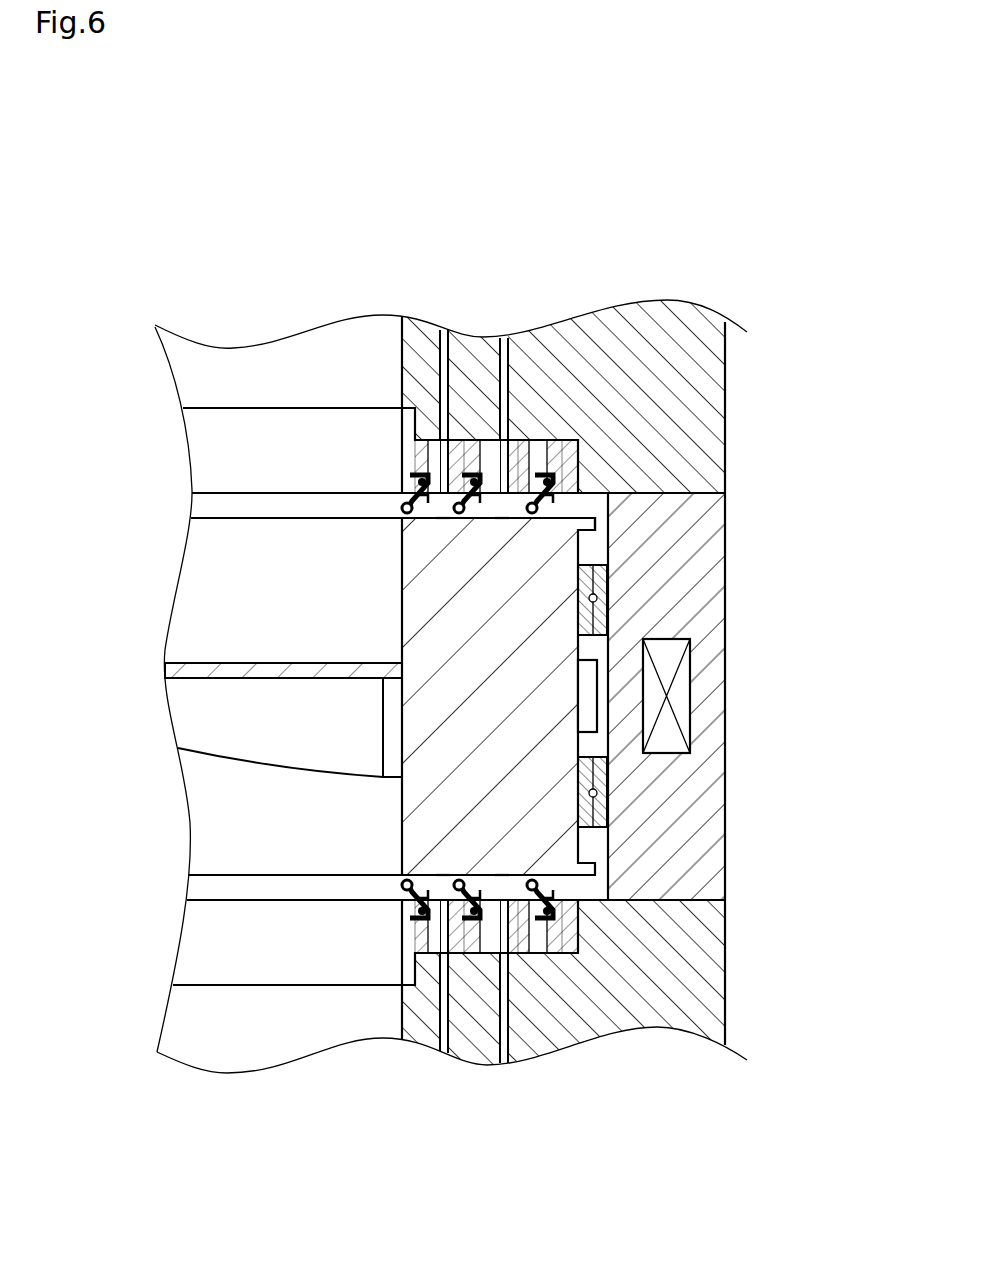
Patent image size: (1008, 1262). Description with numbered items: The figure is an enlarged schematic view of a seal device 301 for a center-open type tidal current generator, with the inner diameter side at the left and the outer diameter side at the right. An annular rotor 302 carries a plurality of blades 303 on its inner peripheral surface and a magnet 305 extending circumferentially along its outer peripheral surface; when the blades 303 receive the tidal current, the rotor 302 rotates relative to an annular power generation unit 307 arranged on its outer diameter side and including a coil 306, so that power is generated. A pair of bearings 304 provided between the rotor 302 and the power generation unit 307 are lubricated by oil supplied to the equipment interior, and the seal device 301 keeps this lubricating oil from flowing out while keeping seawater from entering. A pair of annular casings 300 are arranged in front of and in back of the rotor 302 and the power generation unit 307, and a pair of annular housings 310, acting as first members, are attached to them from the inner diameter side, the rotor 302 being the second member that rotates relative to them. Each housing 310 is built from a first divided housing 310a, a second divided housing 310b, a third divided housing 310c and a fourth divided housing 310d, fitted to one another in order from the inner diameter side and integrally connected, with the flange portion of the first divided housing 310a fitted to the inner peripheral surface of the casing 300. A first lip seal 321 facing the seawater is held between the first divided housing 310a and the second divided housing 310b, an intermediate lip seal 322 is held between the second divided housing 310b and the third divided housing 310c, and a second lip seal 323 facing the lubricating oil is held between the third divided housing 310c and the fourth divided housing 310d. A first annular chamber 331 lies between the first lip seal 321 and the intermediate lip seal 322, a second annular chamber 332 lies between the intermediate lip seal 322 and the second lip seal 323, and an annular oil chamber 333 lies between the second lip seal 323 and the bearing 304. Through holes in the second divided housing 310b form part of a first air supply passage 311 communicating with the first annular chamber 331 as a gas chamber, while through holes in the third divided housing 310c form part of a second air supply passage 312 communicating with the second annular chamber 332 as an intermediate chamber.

The annular casing 300 is at (490, 699).
The seal device 301 is at (386, 396).
The rotor 302 is at (375, 598).
The blade 303 is at (205, 690).
The bearing 304 is at (604, 598).
The magnet 305 is at (592, 718).
The coil 306 is at (690, 700).
The power generation unit 307 is at (738, 645).
The housing 310 is at (475, 699).
The first divided housing 310a is at (410, 440).
The second divided housing 310b is at (470, 440).
The third divided housing 310c is at (513, 440).
The fourth divided housing 310d is at (553, 440).
The first air supply passage 311 is at (444, 364).
The second air supply passage 312 is at (505, 368).
The first lip seal 321 is at (418, 521).
The intermediate lip seal 322 is at (477, 521).
The second lip seal 323 is at (537, 521).
The first annular chamber 331 is at (443, 521).
The second annular chamber 332 is at (502, 521).
The annular oil chamber 333 is at (598, 542).